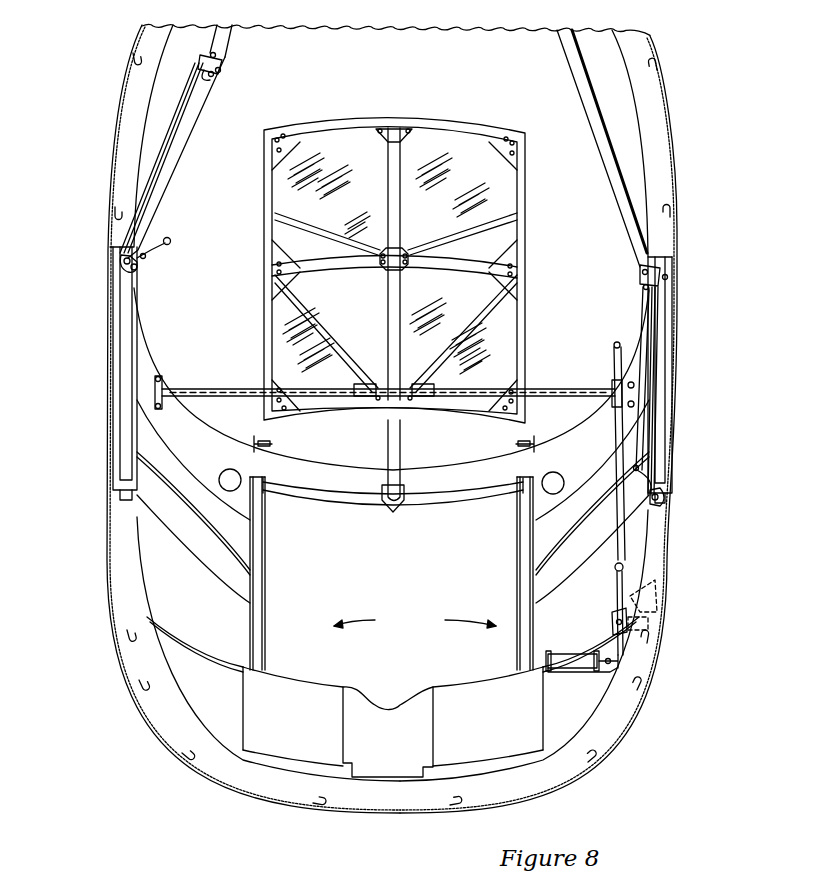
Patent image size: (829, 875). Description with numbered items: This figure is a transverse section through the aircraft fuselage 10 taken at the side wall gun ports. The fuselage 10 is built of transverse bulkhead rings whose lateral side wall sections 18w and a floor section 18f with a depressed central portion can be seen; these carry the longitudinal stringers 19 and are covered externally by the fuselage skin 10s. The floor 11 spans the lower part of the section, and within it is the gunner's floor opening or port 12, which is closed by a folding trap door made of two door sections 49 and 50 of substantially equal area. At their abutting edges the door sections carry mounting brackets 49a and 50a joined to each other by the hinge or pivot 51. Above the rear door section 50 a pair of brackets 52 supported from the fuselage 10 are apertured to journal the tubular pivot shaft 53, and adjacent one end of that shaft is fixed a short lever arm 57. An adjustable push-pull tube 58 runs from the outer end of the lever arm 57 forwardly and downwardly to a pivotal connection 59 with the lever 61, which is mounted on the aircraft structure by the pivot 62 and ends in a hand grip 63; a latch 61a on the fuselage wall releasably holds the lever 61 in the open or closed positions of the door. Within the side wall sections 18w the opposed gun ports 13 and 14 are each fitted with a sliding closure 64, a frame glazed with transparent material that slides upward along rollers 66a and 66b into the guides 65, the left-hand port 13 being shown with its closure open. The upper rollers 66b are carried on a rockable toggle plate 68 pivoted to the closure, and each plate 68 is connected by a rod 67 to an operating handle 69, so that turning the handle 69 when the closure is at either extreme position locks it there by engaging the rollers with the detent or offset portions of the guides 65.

The aircraft fuselage 10 is at (100, 101).
The fuselage skin 10s is at (672, 104).
The floor 11 is at (500, 768).
The gunner's port 12 is at (391, 573).
The gun port 13 is at (115, 466).
The gun port 14 is at (655, 478).
The floor section 18f is at (162, 420).
The side wall section 18w is at (118, 180).
The longitudinal stringers 19 is at (134, 688).
The door section 49 is at (527, 192).
The mounting bracket 49a is at (252, 434).
The door section 50 is at (423, 500).
The mounting bracket 50a is at (252, 476).
The hinge 51 is at (272, 443).
The brackets 52 is at (160, 382).
The tubular pivot shaft 53 is at (166, 389).
The lever arm 57 is at (620, 352).
The push-pull tube 58 is at (603, 505).
The pivotal connection 59 is at (614, 566).
The lever 61 is at (612, 625).
The latch 61a is at (655, 608).
The pivot 62 is at (614, 595).
The hand grip 63 is at (566, 653).
The sliding closure 64 is at (181, 100).
The guides 65 is at (222, 44).
The rollers 66a is at (124, 275).
The rollers 66b is at (213, 75).
The rods 67 is at (180, 176).
The rockable plate 68 is at (224, 66).
The operating handle 69 is at (158, 250).